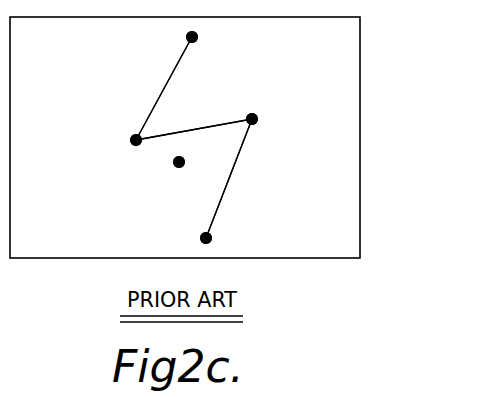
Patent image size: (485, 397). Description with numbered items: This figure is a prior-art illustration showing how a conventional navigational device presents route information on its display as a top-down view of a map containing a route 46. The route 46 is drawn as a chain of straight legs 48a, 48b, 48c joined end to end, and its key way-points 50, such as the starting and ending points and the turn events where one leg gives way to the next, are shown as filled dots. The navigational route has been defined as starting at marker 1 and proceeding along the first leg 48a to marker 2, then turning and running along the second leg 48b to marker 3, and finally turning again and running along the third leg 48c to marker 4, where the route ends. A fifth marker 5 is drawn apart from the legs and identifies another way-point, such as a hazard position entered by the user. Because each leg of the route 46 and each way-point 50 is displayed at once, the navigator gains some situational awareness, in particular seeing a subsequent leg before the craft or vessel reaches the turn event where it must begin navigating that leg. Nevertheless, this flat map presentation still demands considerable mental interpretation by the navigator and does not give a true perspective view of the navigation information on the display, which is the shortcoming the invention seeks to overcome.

The marker 1 is at (217, 239).
The marker 2 is at (264, 127).
The marker 3 is at (125, 142).
The marker 4 is at (205, 38).
The marker 5 is at (190, 163).
The route 46 is at (150, 95).
The leg 48a is at (232, 175).
The leg 48b is at (195, 127).
The leg 48c is at (178, 63).
The way-point 50 is at (186, 38).